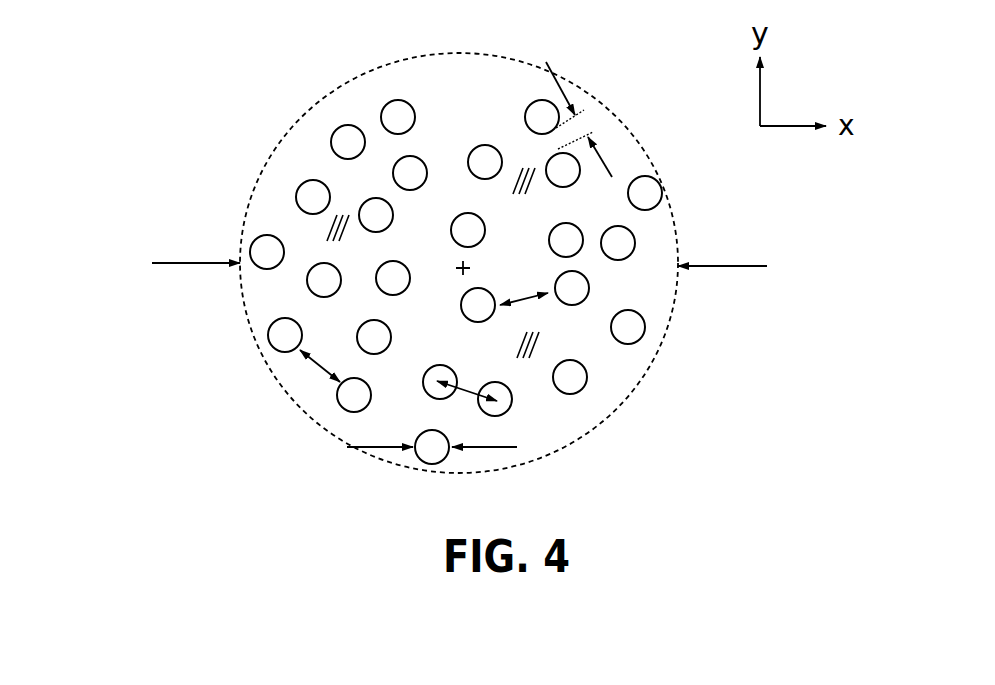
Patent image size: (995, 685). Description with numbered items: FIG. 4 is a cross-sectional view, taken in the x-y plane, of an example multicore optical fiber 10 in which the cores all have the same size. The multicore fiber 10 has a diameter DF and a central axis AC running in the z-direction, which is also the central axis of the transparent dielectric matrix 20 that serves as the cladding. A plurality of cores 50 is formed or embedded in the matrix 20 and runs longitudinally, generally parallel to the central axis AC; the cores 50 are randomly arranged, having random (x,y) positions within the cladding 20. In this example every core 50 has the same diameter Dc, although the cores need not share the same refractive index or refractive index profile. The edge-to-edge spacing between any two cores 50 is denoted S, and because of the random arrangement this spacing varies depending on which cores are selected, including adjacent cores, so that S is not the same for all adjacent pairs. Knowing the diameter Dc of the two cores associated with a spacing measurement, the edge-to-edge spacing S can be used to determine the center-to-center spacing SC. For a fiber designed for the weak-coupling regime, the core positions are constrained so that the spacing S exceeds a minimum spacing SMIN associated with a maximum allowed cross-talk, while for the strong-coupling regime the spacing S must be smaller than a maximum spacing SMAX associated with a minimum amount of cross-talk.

The multicore optical fiber 10 is at (173, 82).
The transparent dielectric matrix 20 is at (470, 92).
The cores 50 is at (375, 213).
The minimum spacing SMIN is at (561, 91).
The maximum spacing SMAX is at (320, 368).
The edge-to-edge spacing S is at (527, 302).
The center-to-center spacing SC is at (462, 388).
The core diameter Dc is at (487, 448).
The fiber diameter DF is at (725, 267).
The central axis AC is at (471, 265).